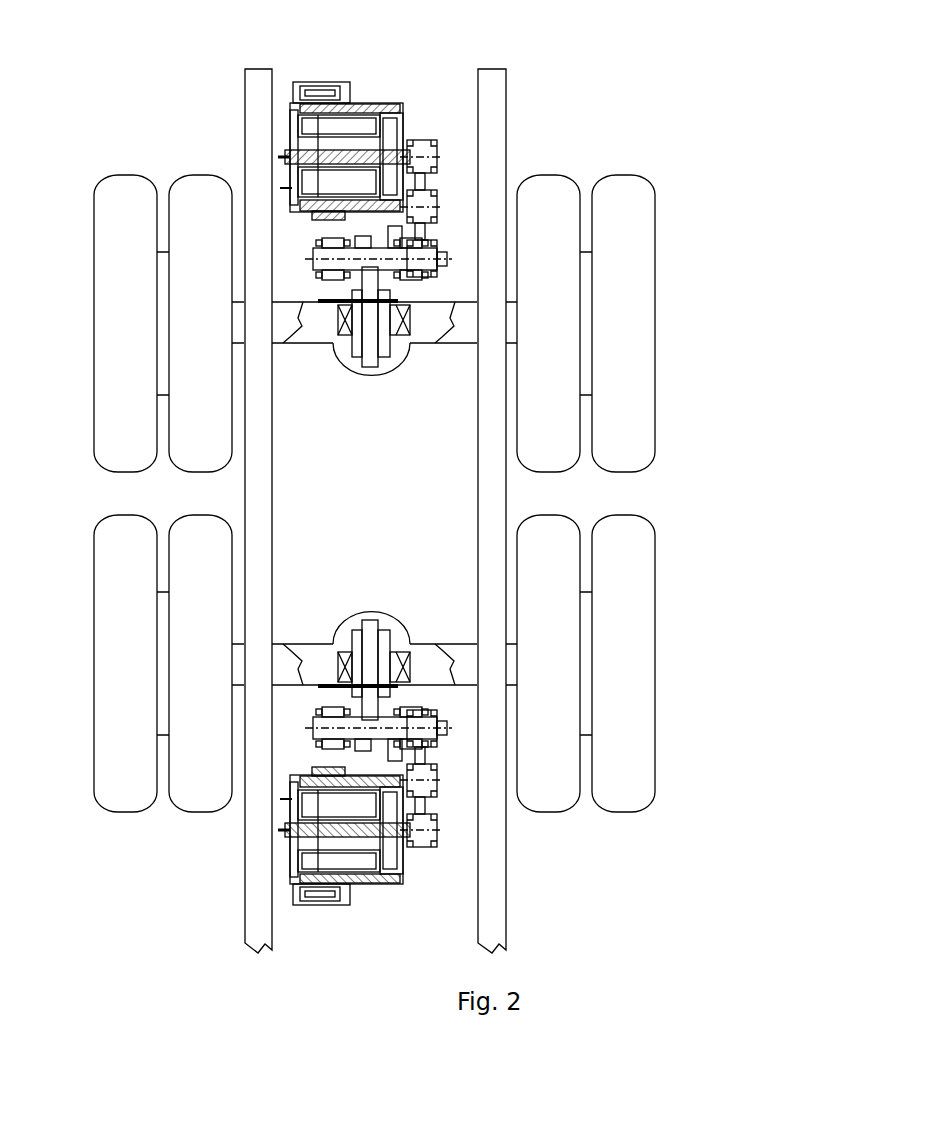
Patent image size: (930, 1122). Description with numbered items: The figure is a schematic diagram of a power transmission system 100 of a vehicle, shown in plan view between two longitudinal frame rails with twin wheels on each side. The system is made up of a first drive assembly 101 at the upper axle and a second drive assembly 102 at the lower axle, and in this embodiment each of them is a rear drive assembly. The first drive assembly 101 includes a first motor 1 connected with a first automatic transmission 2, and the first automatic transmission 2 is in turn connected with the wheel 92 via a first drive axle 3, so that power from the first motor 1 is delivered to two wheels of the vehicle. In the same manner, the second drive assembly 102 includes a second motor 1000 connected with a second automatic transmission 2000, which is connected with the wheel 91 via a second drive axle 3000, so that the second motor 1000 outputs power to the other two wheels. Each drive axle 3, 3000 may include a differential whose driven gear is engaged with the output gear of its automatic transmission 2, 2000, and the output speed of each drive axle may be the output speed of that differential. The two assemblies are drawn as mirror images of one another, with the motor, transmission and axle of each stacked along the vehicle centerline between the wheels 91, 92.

The power transmission system 100 is at (558, 45).
The first drive assembly 101 is at (190, 88).
The second drive assembly 102 is at (770, 648).
The first motor 1 is at (323, 176).
The first automatic transmission 2 is at (340, 240).
The first drive axle 3 is at (308, 315).
The second motor 1000 is at (380, 848).
The second automatic transmission 2000 is at (400, 737).
The second drive axle 3000 is at (437, 670).
The wheel 91 is at (130, 670).
The wheel 92 is at (622, 309).